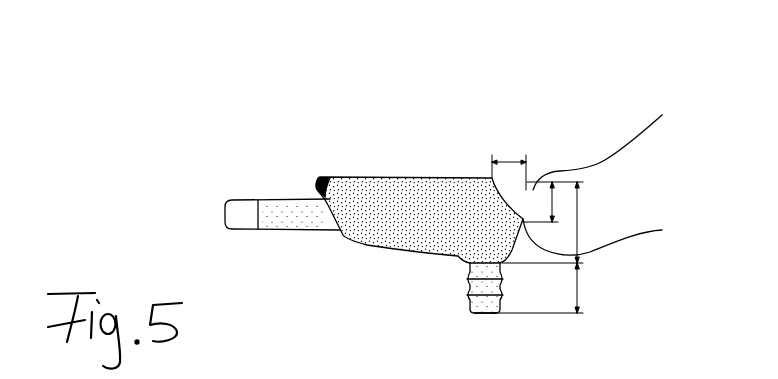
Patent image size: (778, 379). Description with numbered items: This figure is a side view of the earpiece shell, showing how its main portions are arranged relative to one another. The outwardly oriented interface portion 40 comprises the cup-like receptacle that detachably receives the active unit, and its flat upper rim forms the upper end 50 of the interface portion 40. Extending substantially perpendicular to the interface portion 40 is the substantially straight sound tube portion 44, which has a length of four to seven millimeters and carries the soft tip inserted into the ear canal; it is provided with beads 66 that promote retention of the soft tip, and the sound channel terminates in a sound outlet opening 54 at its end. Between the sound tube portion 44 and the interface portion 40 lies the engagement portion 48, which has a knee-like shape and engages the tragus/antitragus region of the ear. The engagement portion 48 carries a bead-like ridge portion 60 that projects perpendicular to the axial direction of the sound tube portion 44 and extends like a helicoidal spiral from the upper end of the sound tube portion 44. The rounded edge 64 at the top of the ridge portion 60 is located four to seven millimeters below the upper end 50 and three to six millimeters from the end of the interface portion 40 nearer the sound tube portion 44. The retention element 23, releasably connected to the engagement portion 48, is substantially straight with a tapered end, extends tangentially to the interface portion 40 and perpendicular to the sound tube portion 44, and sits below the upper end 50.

The retention element 23 is at (284, 208).
The interface portion 40 is at (509, 198).
The upper end 50 is at (379, 177).
The engagement portion 48 is at (605, 146).
The rounded edge 64 is at (615, 141).
The ridge portion 60 is at (613, 232).
The sound tube portion 44 is at (488, 314).
The beads 66 is at (500, 292).
The sound outlet opening 54 is at (483, 315).